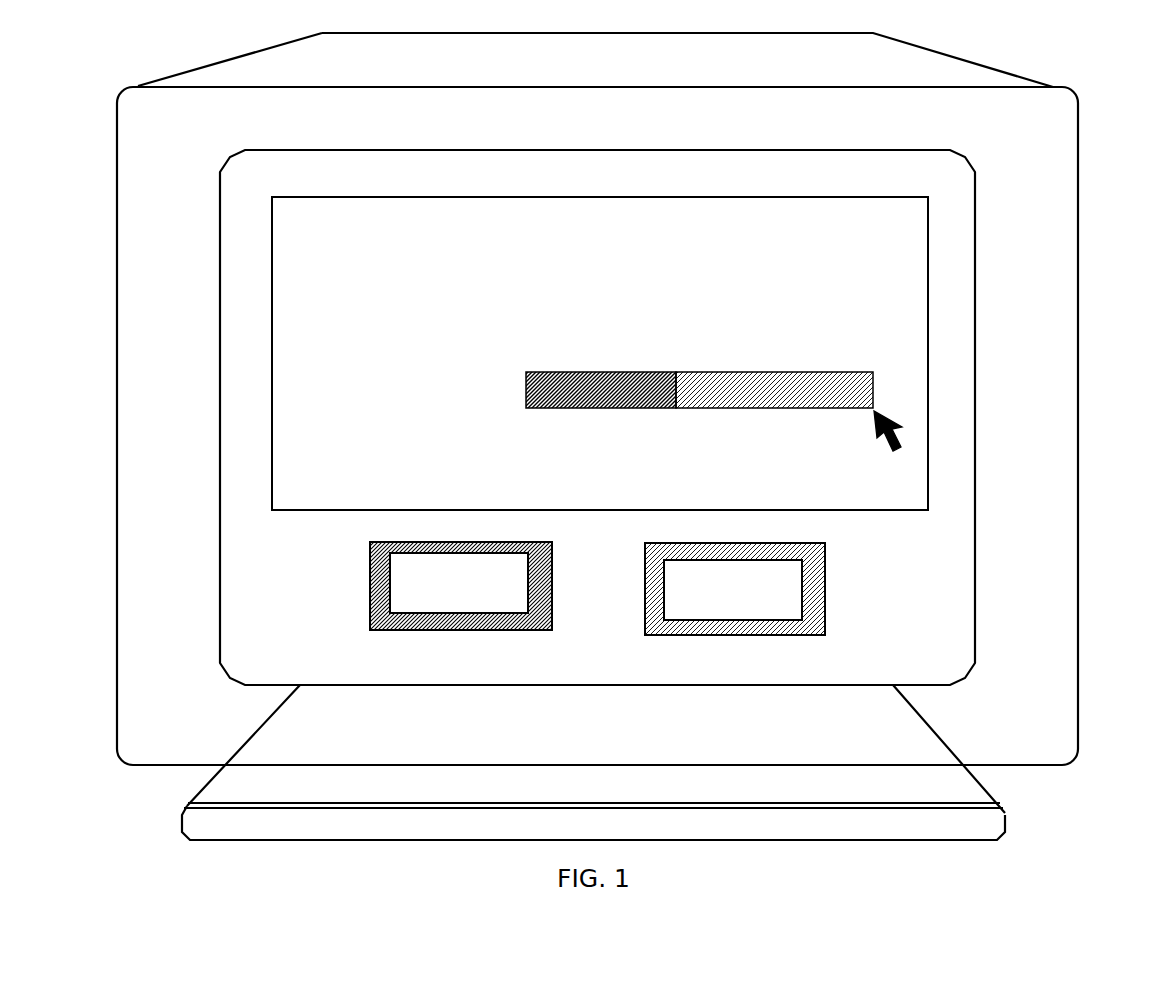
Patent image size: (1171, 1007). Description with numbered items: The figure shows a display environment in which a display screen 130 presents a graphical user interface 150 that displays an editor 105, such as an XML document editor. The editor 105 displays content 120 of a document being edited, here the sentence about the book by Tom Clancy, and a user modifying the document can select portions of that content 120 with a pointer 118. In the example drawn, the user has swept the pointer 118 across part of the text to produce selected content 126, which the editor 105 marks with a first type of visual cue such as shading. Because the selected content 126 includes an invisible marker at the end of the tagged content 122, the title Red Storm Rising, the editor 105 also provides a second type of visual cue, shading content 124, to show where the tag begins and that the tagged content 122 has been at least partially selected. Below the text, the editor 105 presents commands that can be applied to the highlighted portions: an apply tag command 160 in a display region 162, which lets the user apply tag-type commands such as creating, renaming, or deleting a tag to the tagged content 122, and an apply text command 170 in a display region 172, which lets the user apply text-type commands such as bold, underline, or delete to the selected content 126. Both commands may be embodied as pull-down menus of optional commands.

The editor 105 is at (621, 287).
The pointer 118 is at (884, 457).
The content 120 is at (345, 344).
The tagged content 122 is at (699, 388).
The content 124 is at (676, 410).
The selected content 126 is at (774, 426).
The display screen 130 is at (1087, 331).
The graphical user interface 150 is at (165, 360).
The apply tag command 160 is at (400, 586).
The display region 162 is at (447, 586).
The apply text command 170 is at (675, 593).
The display region 172 is at (729, 589).